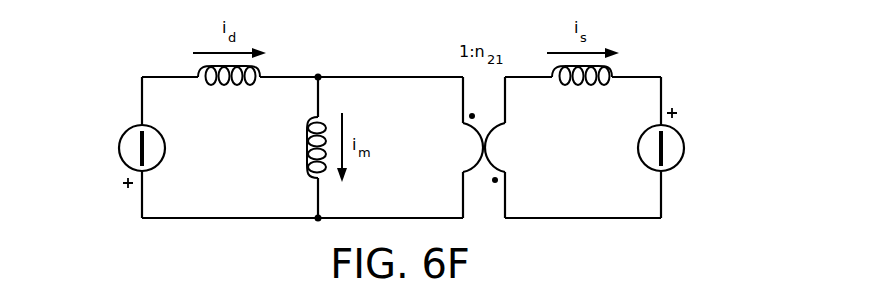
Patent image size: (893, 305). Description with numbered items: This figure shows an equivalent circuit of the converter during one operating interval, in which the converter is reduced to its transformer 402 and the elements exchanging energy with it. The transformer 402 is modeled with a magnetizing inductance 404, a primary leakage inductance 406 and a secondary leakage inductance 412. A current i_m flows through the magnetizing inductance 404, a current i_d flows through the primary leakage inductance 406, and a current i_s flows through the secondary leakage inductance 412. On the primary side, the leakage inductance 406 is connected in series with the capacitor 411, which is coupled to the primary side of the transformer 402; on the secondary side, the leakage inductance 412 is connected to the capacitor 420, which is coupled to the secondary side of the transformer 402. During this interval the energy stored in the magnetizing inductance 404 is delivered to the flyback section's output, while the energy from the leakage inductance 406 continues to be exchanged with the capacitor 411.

The transformer 402 is at (492, 148).
The magnetizing inductance 404 is at (305, 148).
The primary leakage inductance 406 is at (197, 71).
The capacitor 411 is at (118, 148).
The secondary leakage inductance 412 is at (612, 71).
The capacitor 420 is at (685, 148).